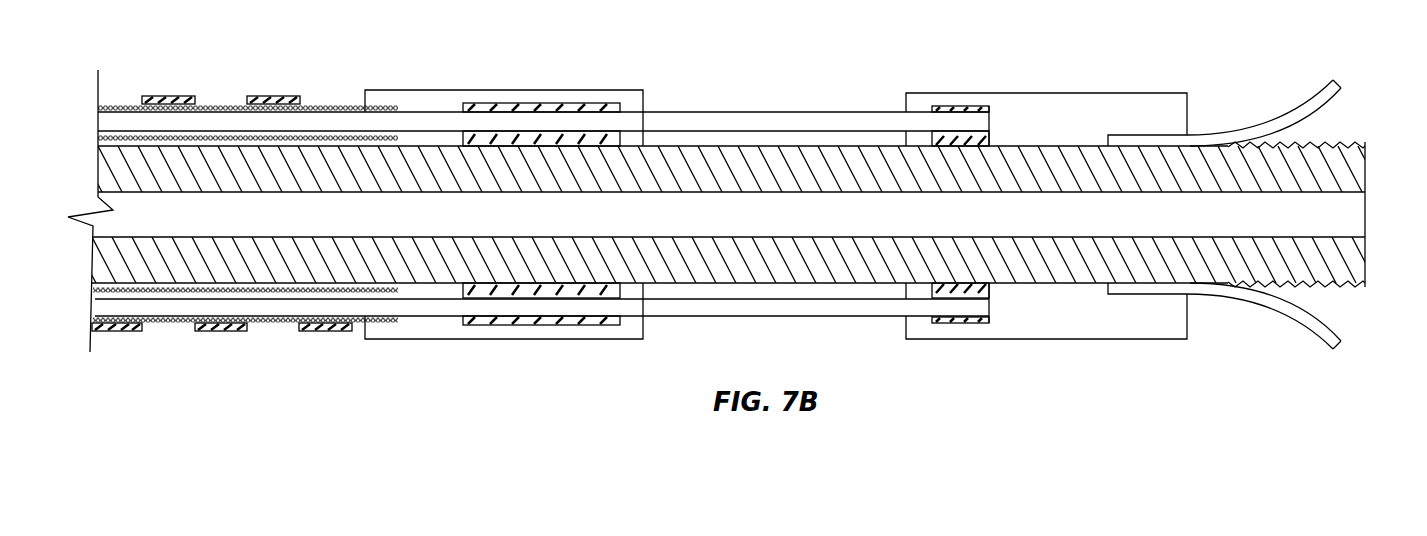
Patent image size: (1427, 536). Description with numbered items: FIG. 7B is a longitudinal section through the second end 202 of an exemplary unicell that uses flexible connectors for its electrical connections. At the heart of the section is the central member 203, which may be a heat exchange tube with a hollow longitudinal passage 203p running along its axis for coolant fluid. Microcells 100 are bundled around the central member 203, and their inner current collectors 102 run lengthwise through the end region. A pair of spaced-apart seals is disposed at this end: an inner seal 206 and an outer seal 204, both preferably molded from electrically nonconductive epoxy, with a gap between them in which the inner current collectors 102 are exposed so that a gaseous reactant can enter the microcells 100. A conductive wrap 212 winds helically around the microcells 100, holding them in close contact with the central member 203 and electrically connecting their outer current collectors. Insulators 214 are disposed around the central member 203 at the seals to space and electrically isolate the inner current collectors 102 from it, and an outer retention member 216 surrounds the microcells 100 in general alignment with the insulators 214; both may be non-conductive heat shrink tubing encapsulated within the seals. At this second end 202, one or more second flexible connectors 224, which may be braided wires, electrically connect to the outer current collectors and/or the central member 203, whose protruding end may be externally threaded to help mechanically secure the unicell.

The microcell 100 is at (330, 100).
The inner current collector 102 is at (748, 125).
The second end 202 is at (1142, 362).
The central member 203 is at (1313, 162).
The hollow longitudinal passage 203p is at (818, 208).
The outer seal 204 is at (1029, 328).
The inner seal 206 is at (400, 339).
The conductive wrap 212 is at (170, 96).
The insulator 214 is at (965, 146).
The outer retention member 216 is at (970, 108).
The second flexible connector 224 is at (1288, 115).